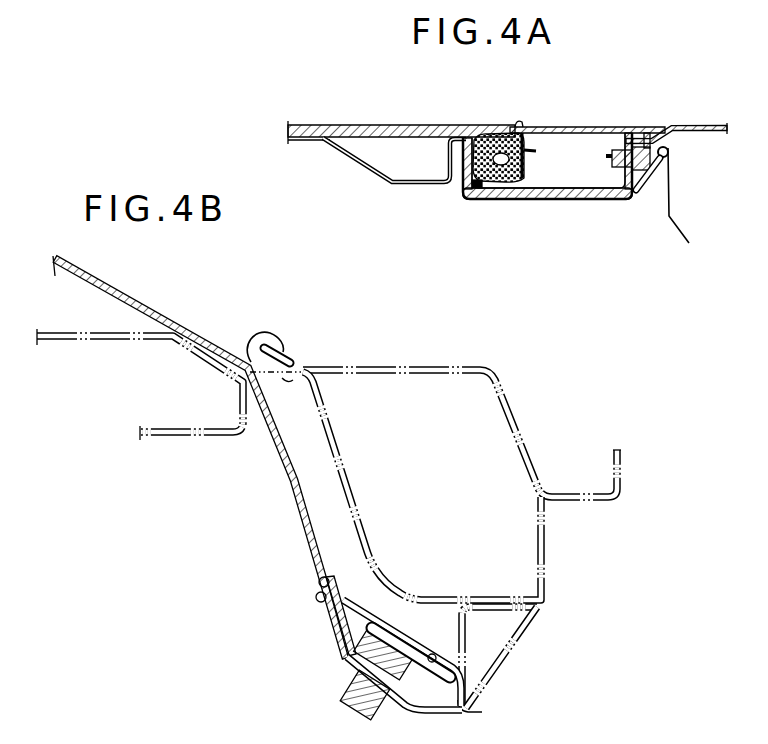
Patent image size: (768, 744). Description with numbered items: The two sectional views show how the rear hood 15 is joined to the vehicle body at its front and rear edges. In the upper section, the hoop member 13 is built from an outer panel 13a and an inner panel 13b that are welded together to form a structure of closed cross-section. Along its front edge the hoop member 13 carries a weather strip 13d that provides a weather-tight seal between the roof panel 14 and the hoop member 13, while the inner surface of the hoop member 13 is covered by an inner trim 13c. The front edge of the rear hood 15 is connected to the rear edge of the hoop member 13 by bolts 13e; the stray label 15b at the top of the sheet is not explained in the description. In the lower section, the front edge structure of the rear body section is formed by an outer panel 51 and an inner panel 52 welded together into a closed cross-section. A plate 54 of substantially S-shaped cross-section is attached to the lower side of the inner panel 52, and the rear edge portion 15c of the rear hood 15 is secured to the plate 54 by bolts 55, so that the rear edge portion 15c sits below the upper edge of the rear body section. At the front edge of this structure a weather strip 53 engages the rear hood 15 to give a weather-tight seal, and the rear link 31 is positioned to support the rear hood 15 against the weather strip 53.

In FIG. 4A, the hoop member 13 is at (557, 155).
In FIG. 4A, the outer panel 13a is at (548, 126).
In FIG. 4A, the inner panel 13b is at (550, 186).
In FIG. 4A, the inner trim 13c is at (576, 200).
In FIG. 4A, the weather strip 13d is at (482, 200).
In FIG. 4A, the bolts 13e is at (615, 150).
In FIG. 4A, the roof panel 14 is at (381, 124).
In FIG. 4A, the rear hood 15 is at (714, 125).
In FIG. 4B, the rear hood 15 is at (143, 303).
In FIG. 4A, the side panel portion 15b is at (109, 17).
In FIG. 4A, the rear edge portion 15c is at (681, 133).
In FIG. 4B, the rear edge portion 15c is at (327, 563).
In FIG. 4B, the rear link 31 is at (132, 347).
In FIG. 4B, the outer panel 51 is at (405, 367).
In FIG. 4B, the inner panel 52 is at (352, 472).
In FIG. 4B, the weather strip 53 is at (258, 330).
In FIG. 4B, the plate 54 is at (474, 712).
In FIG. 4B, the bolts 55 is at (356, 690).